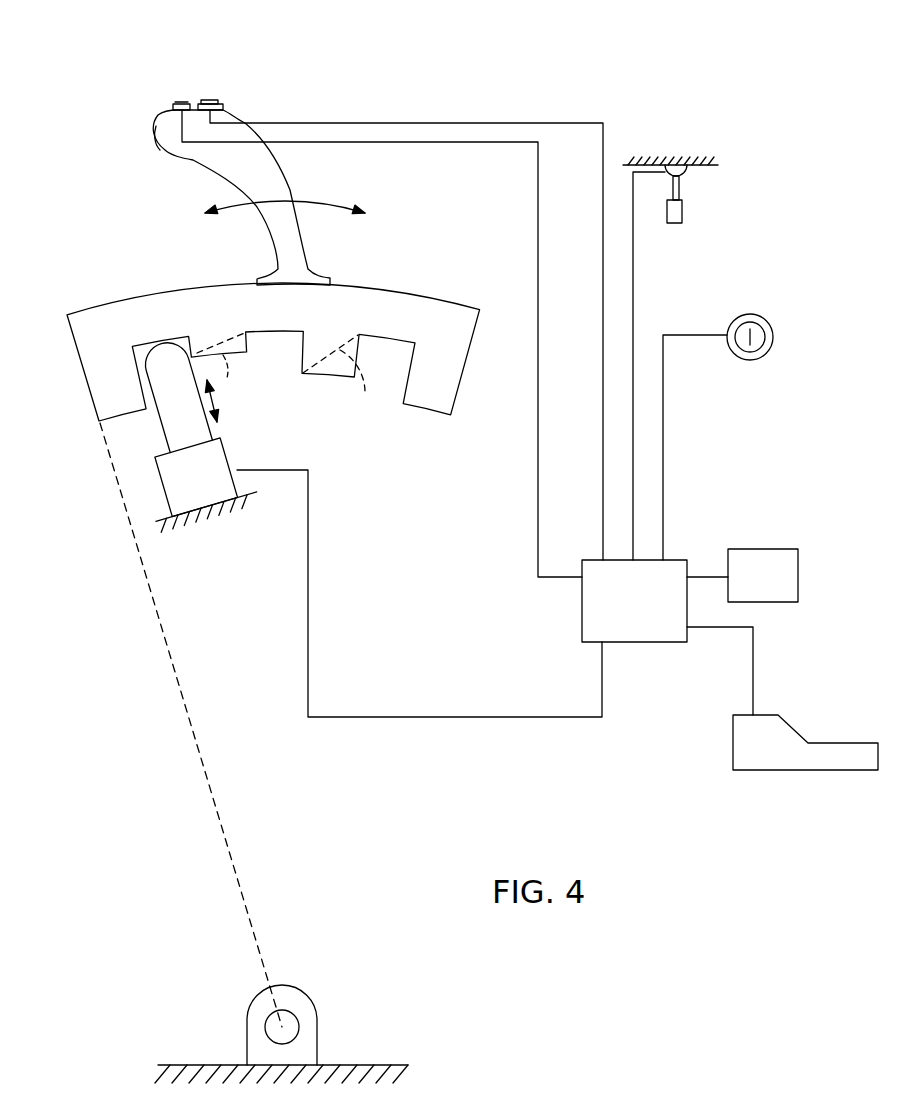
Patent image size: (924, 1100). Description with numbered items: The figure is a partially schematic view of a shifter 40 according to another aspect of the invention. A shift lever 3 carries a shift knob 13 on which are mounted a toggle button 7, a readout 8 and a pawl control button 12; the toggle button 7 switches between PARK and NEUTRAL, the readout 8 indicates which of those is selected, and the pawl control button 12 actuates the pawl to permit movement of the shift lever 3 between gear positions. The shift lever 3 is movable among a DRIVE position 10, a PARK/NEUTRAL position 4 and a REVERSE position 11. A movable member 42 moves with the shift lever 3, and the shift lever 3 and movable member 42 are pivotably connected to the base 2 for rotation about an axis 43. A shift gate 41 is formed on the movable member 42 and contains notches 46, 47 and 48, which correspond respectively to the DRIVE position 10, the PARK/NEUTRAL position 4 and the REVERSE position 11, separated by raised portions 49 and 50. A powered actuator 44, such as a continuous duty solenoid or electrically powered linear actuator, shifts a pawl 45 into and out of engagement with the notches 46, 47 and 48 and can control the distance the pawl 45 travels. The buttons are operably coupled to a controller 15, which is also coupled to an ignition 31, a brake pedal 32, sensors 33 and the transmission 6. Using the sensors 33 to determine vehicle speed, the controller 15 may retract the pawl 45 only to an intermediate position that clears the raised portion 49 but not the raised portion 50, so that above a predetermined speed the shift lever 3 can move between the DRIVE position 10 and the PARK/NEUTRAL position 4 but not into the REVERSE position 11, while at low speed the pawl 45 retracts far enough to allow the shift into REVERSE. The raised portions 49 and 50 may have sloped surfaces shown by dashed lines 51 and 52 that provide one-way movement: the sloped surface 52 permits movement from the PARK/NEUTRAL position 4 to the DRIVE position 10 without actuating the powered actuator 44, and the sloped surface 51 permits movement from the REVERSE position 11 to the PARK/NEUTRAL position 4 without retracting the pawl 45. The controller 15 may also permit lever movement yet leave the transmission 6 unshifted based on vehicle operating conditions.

The base 2 is at (348, 1064).
The shift lever 3 is at (280, 175).
The PARK/NEUTRAL position 4 is at (243, 300).
The transmission 6 is at (783, 750).
The toggle button 7 is at (215, 100).
The readout 8 is at (224, 108).
The DRIVE position 10 is at (145, 302).
The REVERSE position 11 is at (386, 297).
The pawl control button 12 is at (180, 103).
The shift knob 13 is at (160, 128).
The controller 15 is at (603, 610).
The ignition 31 is at (757, 318).
The brake pedal 32 is at (677, 190).
The sensors 33 is at (761, 574).
The shifter 40 is at (68, 225).
The shift gate 41 is at (388, 480).
The movable member 42 is at (93, 320).
The axis 43 is at (305, 1012).
The powered actuator 44 is at (206, 497).
The pawl 45 is at (167, 425).
The notch 46 is at (143, 357).
The notch 47 is at (283, 342).
The notch 48 is at (397, 358).
The raised portion 49 is at (238, 355).
The raised portion 50 is at (341, 380).
The sloped surface 51 is at (362, 385).
The sloped surface 52 is at (230, 388).